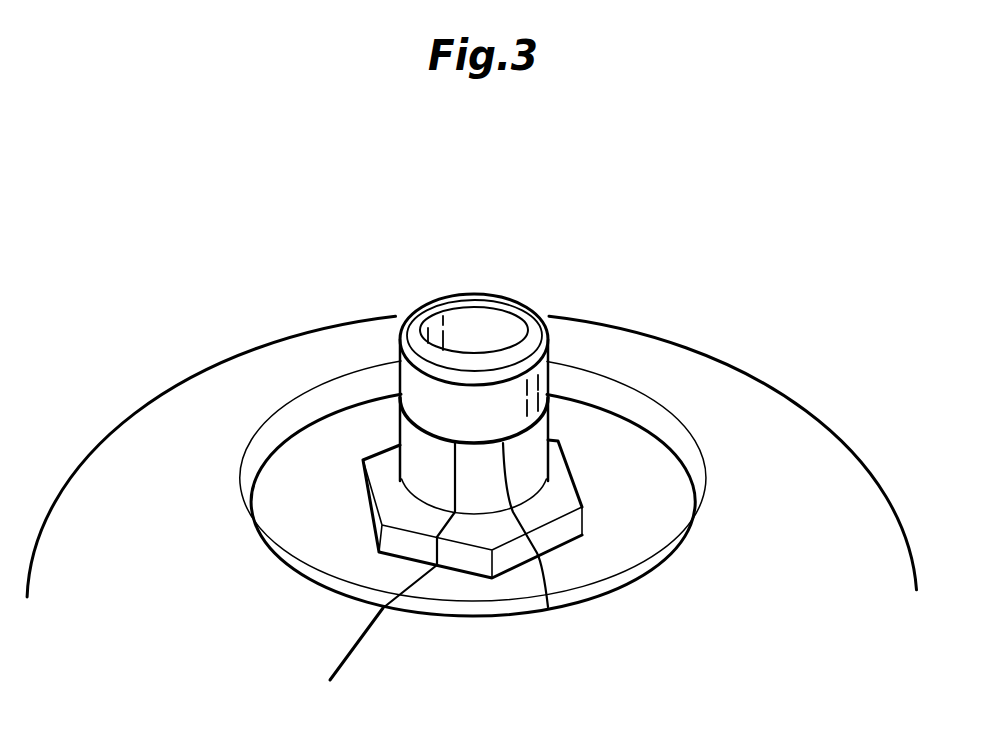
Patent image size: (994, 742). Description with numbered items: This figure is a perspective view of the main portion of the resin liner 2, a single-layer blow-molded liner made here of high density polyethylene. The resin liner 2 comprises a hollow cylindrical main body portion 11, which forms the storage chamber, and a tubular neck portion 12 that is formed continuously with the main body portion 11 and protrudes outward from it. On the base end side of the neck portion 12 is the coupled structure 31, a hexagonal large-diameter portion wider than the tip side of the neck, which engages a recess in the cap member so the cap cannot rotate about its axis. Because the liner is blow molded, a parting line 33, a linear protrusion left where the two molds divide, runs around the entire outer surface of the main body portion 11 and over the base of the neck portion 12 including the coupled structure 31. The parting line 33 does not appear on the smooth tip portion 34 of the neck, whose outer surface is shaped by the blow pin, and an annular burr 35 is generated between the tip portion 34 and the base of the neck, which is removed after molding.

The resin liner 2 is at (742, 262).
The main body portion 11 is at (193, 398).
The neck portion 12 is at (412, 451).
The coupled structure 31 is at (387, 512).
The parting line 33 is at (362, 638).
The tip portion 34 is at (407, 378).
The burr 35 is at (548, 607).